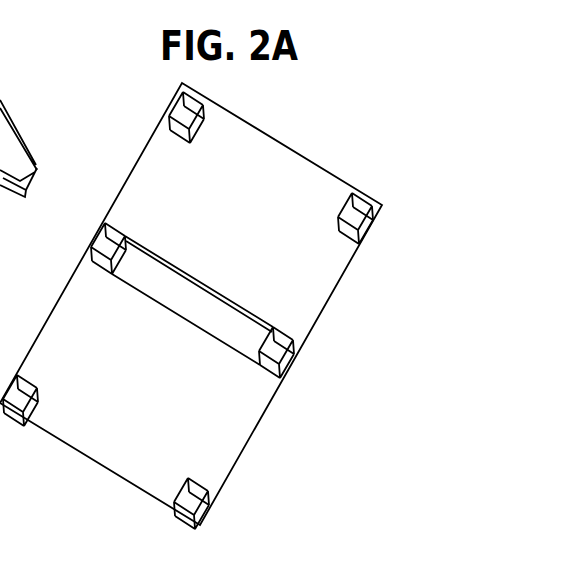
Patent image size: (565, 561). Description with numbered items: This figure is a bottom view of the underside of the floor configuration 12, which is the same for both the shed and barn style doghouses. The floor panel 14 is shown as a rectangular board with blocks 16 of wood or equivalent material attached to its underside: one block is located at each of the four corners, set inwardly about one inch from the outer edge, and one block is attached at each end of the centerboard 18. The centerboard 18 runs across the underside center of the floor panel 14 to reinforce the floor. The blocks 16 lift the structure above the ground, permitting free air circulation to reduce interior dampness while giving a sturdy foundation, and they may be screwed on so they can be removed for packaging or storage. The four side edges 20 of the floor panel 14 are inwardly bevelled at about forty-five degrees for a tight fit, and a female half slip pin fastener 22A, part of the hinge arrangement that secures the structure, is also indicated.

The floor configuration 12 is at (312, 145).
The floor panel 14 is at (144, 163).
The blocks 16 is at (100, 265).
The centerboard 18 is at (262, 316).
The side edges 20 is at (356, 187).
The female half slip pin fastener 22A is at (0, 133).